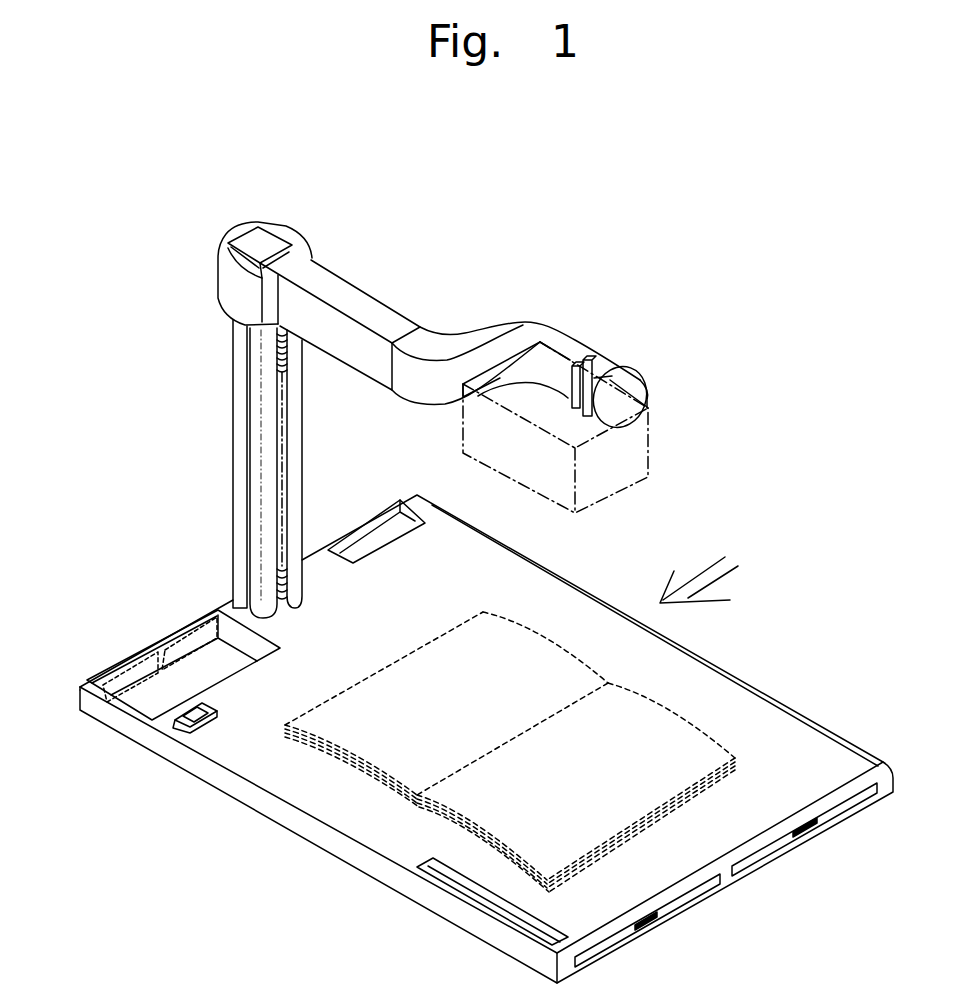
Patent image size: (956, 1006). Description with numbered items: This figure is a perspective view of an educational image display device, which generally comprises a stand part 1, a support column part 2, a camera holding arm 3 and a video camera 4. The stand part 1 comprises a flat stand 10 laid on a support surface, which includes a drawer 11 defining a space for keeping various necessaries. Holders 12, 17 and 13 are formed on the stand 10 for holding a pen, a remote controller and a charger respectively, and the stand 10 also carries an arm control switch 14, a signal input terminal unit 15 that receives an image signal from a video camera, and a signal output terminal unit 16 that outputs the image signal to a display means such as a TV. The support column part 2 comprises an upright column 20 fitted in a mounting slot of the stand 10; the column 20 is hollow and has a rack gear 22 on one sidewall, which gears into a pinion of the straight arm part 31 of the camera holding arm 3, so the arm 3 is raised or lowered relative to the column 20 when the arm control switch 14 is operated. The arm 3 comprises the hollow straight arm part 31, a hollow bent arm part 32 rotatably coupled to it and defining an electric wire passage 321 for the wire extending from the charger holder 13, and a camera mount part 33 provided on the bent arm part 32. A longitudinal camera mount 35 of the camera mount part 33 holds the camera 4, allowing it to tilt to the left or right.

The stand part 1 is at (74, 650).
The support column part 2 is at (225, 420).
The camera holding arm 3 is at (472, 293).
The video camera 4 is at (635, 445).
The flat stand 10 is at (697, 683).
The drawer 11 is at (683, 897).
The holder 12 is at (472, 892).
The charger holder 13 is at (153, 703).
The arm control switch 14 is at (172, 717).
The signal input terminal unit 15 is at (130, 675).
The signal output terminal unit 16 is at (185, 645).
The holder 17 is at (368, 538).
The upright column 20 is at (242, 437).
The rack gear 22 is at (283, 371).
The straight arm part 31 is at (363, 300).
The bent arm part 32 is at (472, 343).
The camera mount part 33 is at (623, 372).
The longitudinal camera mount 35 is at (600, 360).
The electric wire passage 321 is at (527, 342).